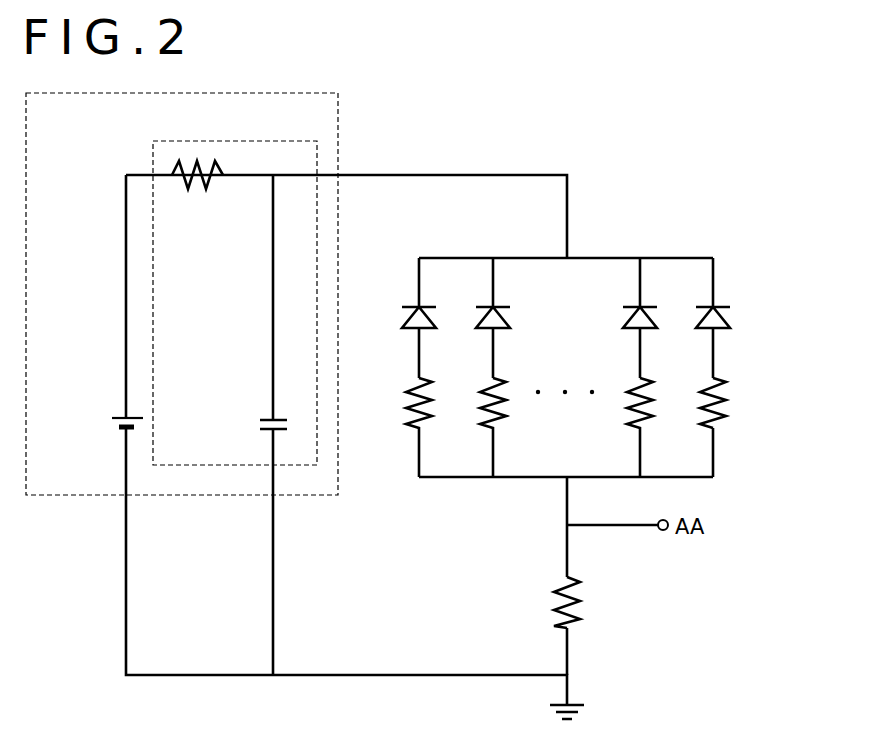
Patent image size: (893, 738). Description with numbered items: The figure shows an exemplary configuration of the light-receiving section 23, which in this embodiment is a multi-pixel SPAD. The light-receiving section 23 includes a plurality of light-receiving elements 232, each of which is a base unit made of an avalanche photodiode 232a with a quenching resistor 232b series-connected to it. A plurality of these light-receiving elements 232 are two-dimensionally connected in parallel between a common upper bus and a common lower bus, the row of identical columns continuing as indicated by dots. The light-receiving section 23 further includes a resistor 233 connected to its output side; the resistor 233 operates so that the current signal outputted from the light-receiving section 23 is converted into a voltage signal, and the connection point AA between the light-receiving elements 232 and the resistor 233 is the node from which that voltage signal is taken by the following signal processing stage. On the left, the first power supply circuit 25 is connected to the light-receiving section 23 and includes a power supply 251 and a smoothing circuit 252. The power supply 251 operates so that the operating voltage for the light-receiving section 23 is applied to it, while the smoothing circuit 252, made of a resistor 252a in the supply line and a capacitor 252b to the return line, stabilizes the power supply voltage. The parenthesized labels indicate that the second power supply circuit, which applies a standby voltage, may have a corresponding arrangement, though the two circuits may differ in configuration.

The first power supply circuit 25 is at (226, 93).
The smoothing circuit 252 is at (182, 141).
The resistor 252a is at (207, 190).
The capacitor 252b is at (262, 419).
The power supply 251 is at (115, 418).
The light-receiving section 23 is at (638, 334).
The light-receiving element 232 is at (785, 367).
The avalanche photodiode 232a is at (729, 323).
The quenching resistor 232b is at (727, 415).
The resistor 233 is at (582, 614).